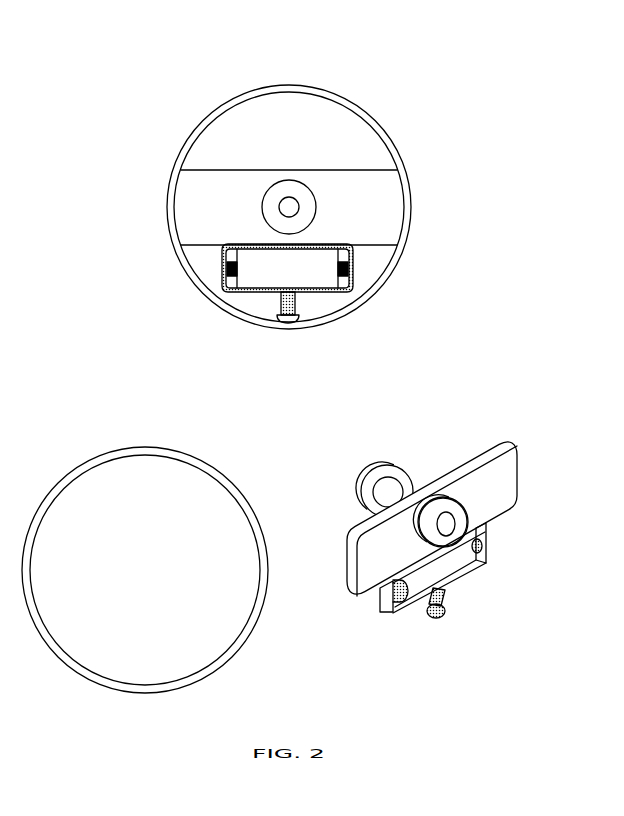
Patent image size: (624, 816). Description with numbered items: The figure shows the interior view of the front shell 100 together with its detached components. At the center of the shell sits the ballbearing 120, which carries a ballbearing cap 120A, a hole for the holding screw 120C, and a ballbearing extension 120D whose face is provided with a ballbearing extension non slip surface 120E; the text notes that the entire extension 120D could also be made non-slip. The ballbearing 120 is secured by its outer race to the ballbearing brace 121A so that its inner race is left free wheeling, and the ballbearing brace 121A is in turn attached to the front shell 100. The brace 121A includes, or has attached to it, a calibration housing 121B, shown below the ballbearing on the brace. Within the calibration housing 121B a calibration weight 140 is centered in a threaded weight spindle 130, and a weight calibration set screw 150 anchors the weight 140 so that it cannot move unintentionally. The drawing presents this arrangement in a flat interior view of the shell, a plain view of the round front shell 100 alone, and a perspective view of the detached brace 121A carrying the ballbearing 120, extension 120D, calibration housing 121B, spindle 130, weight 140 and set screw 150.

The front shell 100 is at (289, 85).
The ballbearing 120 is at (449, 497).
The ballbearing cap 120A is at (458, 508).
The hole for holding screw 120C is at (293, 208).
The ballbearing extension 120D is at (402, 479).
The ballbearing extension non slip surface 120E is at (293, 191).
The ballbearing brace 121A is at (208, 208).
The calibration housing 121B is at (221, 257).
The threaded weight spindle 130 is at (230, 277).
The weight 140 is at (313, 257).
The weight calibration set screw 150 is at (289, 324).